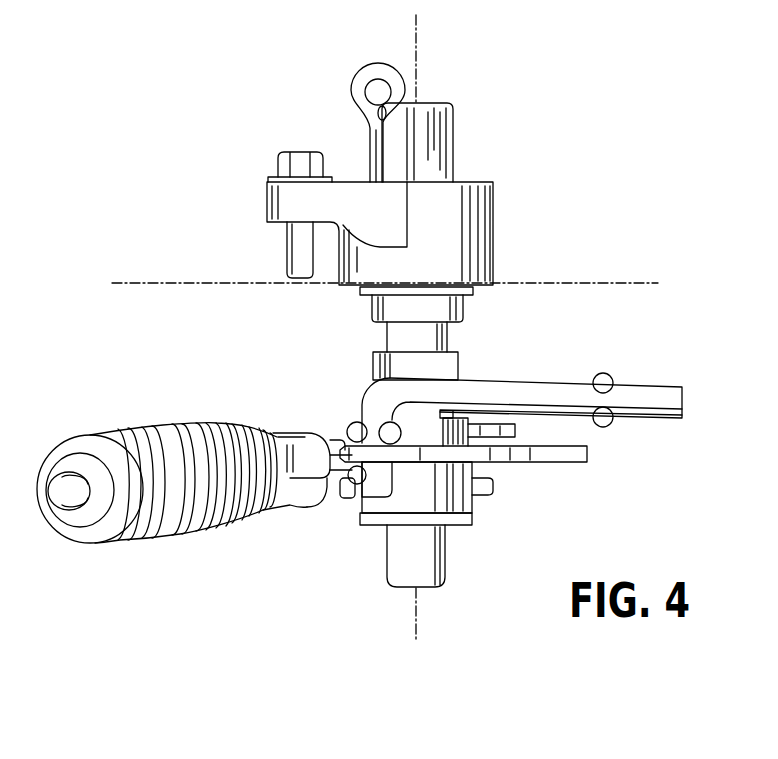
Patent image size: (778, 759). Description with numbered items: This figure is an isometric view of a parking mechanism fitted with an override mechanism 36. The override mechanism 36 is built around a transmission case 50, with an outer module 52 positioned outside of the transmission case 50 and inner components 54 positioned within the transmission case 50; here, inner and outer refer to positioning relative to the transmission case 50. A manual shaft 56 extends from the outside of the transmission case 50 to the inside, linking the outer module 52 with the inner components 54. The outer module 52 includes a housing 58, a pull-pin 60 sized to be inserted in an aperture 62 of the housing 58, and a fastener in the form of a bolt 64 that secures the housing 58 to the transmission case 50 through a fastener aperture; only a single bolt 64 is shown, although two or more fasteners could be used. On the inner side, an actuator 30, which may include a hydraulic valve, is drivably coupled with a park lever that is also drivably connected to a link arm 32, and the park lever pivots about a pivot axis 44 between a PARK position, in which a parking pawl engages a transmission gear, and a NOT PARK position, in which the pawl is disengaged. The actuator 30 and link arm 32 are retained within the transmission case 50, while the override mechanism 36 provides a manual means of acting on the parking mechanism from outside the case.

The actuator 30 is at (97, 432).
The link arm 32 is at (645, 385).
The override mechanism 36 is at (523, 118).
The pivot axis 44 is at (418, 78).
The transmission case 50 is at (170, 281).
The outer module 52 is at (250, 195).
The inner components 54 is at (341, 386).
The manual shaft 56 is at (448, 322).
The housing 58 is at (495, 202).
The pull-pin 60 is at (356, 92).
The aperture 62 is at (372, 176).
The bolt 64 is at (285, 266).